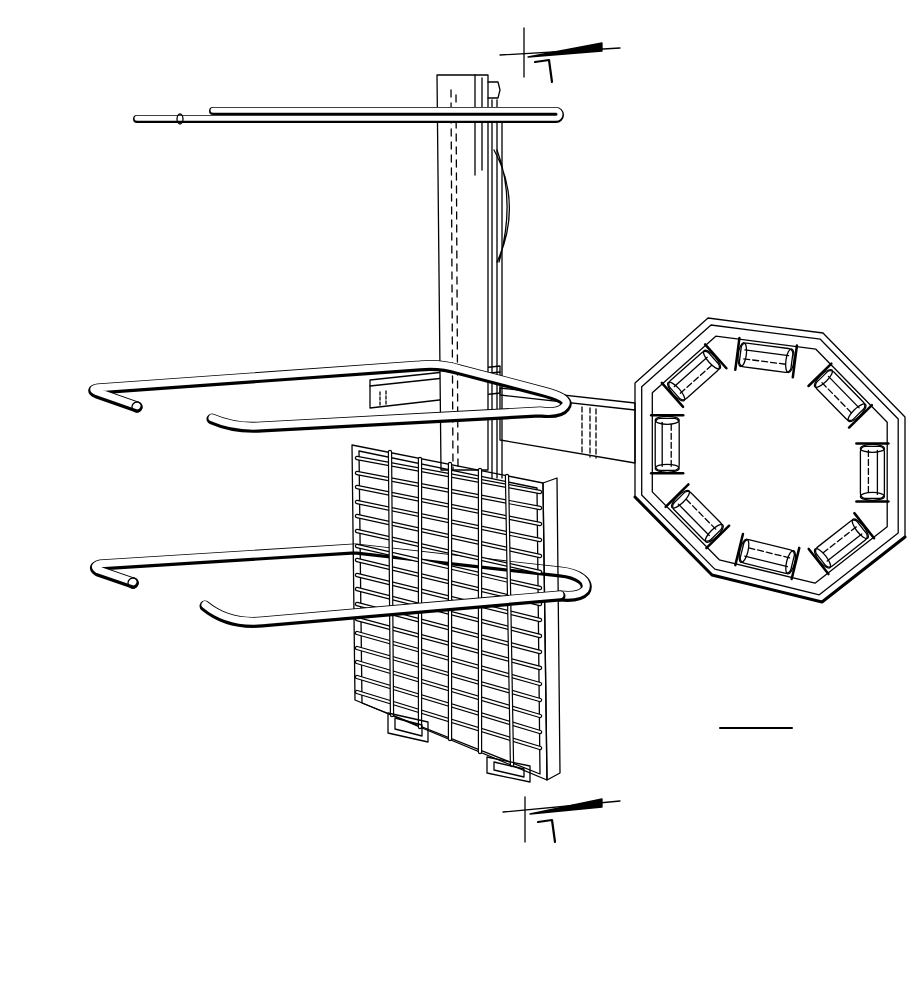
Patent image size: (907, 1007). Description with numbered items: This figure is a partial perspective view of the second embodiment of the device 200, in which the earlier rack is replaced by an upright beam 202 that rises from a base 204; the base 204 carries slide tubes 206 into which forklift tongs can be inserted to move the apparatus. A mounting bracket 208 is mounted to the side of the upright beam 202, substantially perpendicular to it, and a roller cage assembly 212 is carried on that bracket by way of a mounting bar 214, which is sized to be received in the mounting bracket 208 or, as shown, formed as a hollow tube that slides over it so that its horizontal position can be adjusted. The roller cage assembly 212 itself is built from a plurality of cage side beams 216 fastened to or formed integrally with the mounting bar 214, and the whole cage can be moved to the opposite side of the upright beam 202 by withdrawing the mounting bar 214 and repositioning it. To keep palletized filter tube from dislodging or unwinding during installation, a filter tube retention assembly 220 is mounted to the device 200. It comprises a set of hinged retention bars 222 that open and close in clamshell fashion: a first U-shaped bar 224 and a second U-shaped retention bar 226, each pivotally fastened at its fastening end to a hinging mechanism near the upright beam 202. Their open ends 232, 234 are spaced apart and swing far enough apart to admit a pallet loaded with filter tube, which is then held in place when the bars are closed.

The device 200 is at (587, 103).
The upright beam 202 is at (440, 88).
The base 204 is at (350, 464).
The slide tubes 206 is at (490, 772).
The mounting bracket 208 is at (385, 390).
The roller cage assembly 212 is at (690, 322).
The mounting bar 214 is at (583, 412).
The cage side beams 216 is at (672, 360).
The filter tube retention assembly 220 is at (203, 92).
The hinged retention bars 222 is at (160, 112).
The first U-shaped bar 224 is at (313, 623).
The second U-shaped retention bar 226 is at (158, 565).
The open end 232 is at (227, 627).
The open end 234 is at (127, 572).